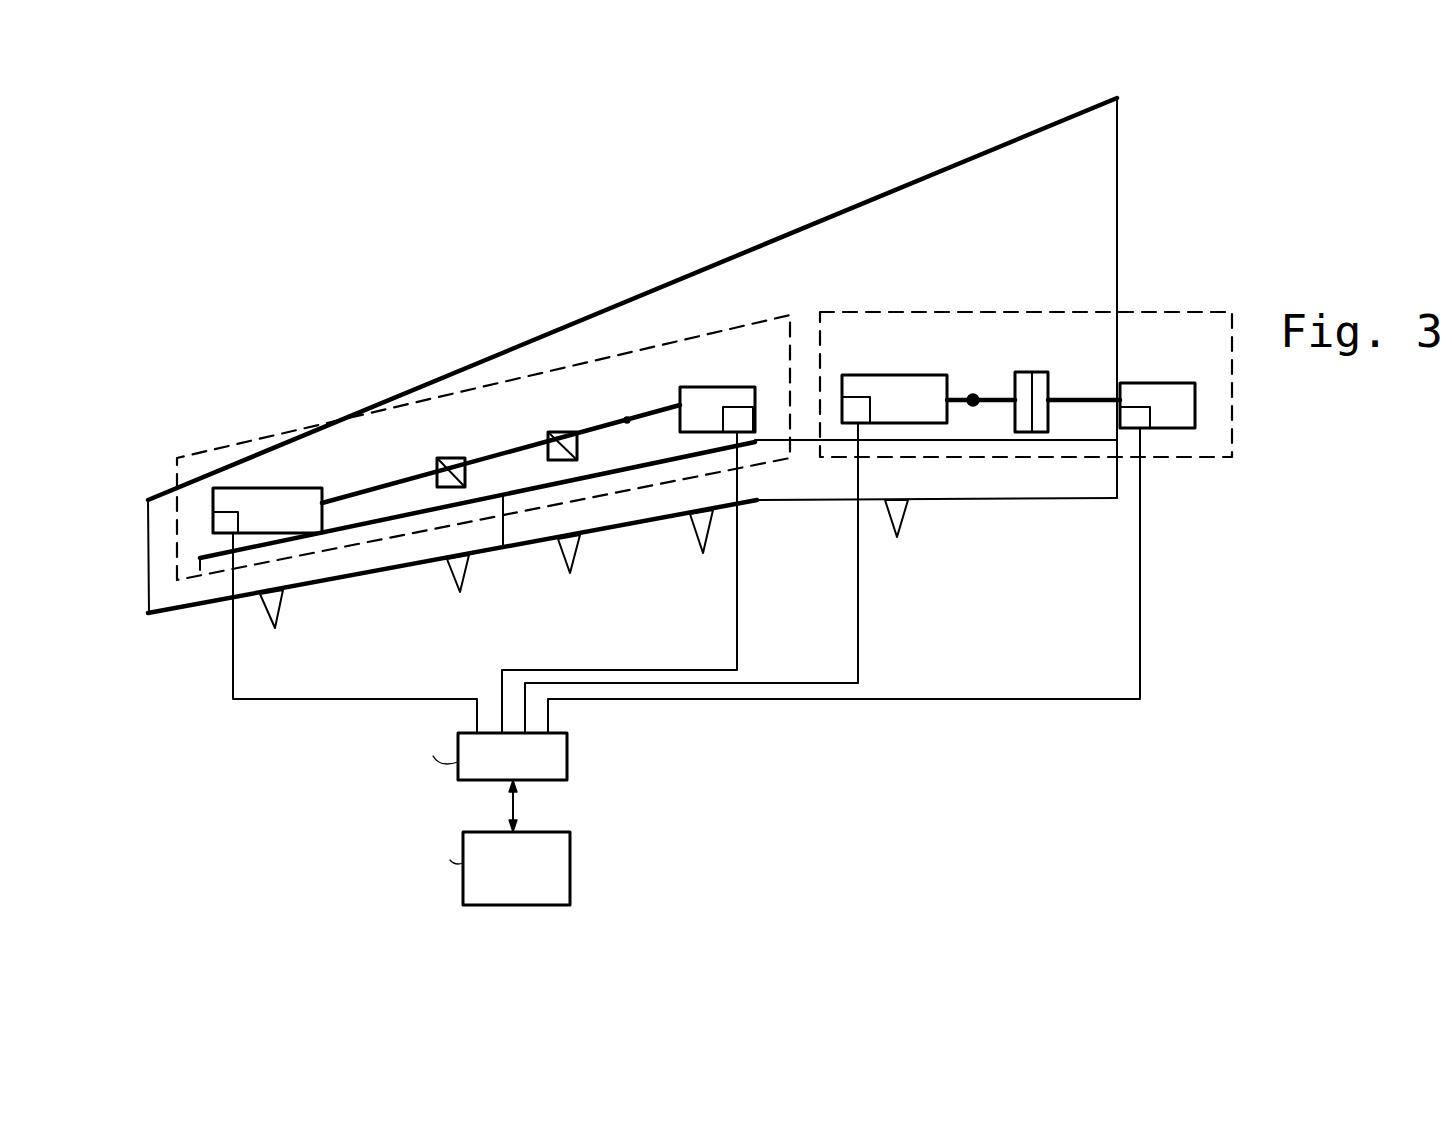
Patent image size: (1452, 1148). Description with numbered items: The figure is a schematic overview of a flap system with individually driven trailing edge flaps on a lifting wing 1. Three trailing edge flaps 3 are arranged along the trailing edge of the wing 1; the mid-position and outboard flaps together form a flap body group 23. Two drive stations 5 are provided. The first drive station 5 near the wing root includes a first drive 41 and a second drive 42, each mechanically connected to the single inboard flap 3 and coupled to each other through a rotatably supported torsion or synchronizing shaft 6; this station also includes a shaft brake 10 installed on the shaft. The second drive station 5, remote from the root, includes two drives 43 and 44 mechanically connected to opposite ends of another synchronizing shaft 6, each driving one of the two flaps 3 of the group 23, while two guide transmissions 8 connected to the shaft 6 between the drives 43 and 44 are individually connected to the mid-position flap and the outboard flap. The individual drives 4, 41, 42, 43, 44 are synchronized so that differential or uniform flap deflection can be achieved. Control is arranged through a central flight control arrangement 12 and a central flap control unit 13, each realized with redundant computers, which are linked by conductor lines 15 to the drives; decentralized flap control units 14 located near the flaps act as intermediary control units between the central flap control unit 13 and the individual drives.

The lifting wing 1 is at (1152, 160).
The trailing edge flap 3 is at (357, 558).
The individual drive 4 is at (297, 405).
The drive station 5 is at (487, 386).
The torsion or synchronizing shaft 6 is at (627, 420).
The guide transmission 8 is at (437, 443).
The shaft brake 10 is at (1055, 345).
The central flight control arrangement 12 is at (343, 868).
The central flap control unit 13 is at (334, 756).
The decentralized flap control unit 14 is at (228, 523).
The conductor line 15 is at (293, 699).
The flap body group 23 is at (540, 556).
The first drive 41 is at (1173, 383).
The second drive 42 is at (925, 375).
The drive 43 is at (690, 387).
The drive 44 is at (227, 486).